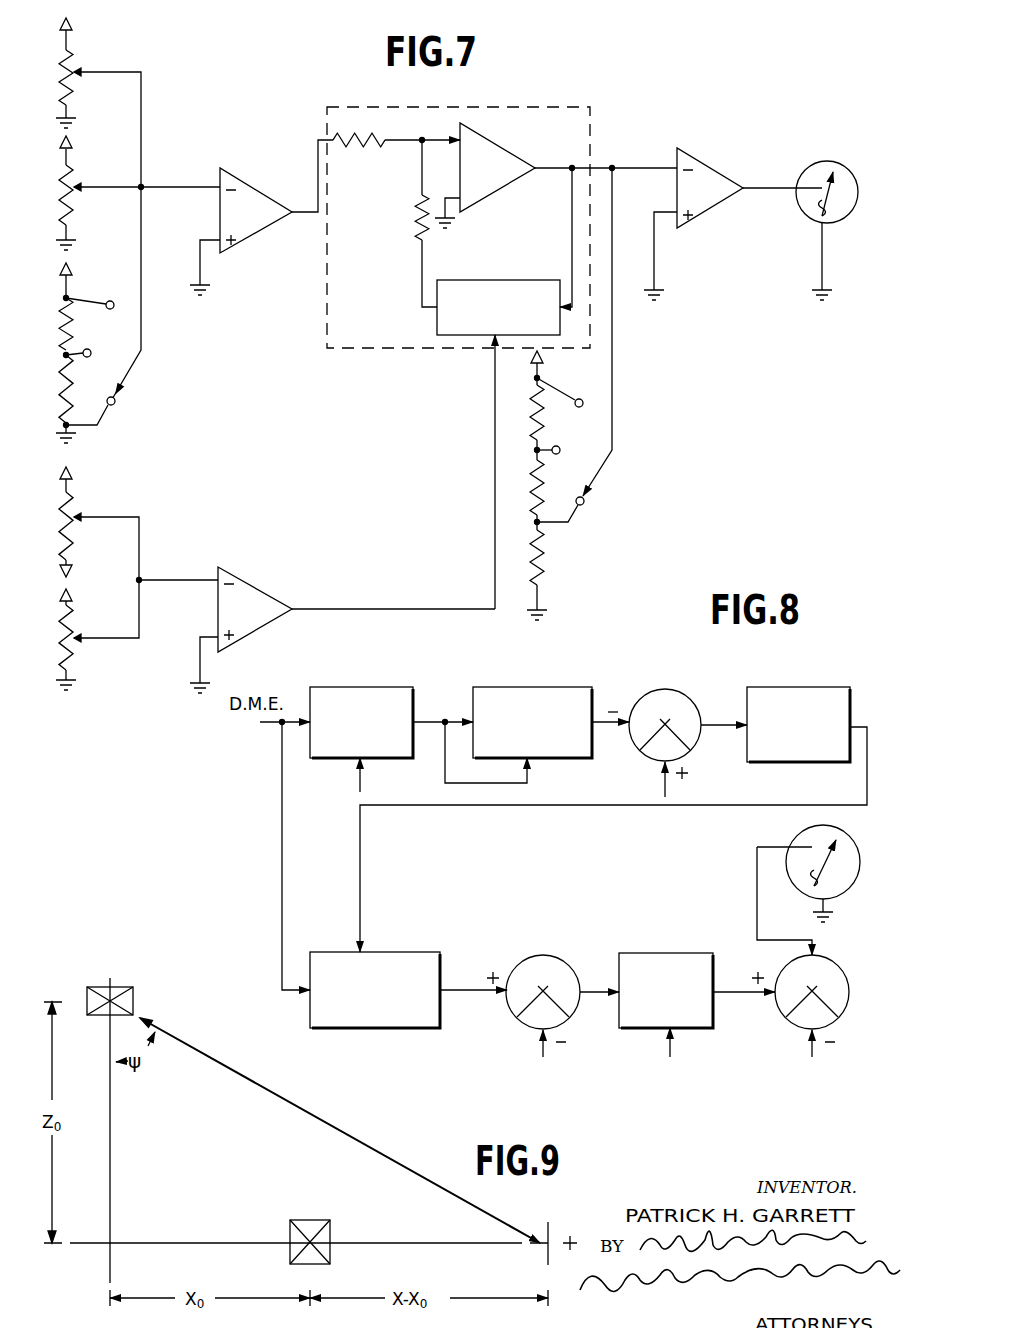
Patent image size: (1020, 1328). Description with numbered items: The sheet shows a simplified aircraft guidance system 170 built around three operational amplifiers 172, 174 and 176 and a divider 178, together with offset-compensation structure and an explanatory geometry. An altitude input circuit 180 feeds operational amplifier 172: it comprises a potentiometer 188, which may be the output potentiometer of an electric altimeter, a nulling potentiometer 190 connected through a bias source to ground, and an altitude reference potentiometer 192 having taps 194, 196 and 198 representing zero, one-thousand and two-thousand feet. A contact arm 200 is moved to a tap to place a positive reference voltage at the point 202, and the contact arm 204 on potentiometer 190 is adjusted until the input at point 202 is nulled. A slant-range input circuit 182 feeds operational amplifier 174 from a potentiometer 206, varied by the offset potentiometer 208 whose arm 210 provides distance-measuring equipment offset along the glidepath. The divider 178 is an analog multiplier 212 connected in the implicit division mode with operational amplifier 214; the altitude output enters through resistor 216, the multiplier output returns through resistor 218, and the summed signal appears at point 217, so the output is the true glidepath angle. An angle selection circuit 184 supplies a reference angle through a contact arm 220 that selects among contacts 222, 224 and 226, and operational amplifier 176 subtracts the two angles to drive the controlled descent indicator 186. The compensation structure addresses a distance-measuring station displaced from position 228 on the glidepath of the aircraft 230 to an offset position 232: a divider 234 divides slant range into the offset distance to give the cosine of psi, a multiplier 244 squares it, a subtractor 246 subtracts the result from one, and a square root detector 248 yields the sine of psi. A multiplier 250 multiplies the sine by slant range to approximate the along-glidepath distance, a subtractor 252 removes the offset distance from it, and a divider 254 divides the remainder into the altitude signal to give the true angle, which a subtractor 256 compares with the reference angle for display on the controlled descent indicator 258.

In FIG. 7, the simplified aircraft guidance system 170 is at (690, 366).
In FIG. 7, the operational amplifier 172 is at (237, 178).
In FIG. 7, the operational amplifier 174 is at (252, 585).
In FIG. 7, the operational amplifier 176 is at (708, 165).
In FIG. 7, the divider 178 is at (400, 350).
In FIG. 7, the altitude input circuit 180 is at (143, 128).
In FIG. 7, the distance-measuring equipment slant-range input circuit 182 is at (142, 563).
In FIG. 7, the angle selection circuit 184 is at (547, 567).
In FIG. 7, the controlled descent indicator 186 is at (806, 225).
In FIG. 7, the potentiometer 188 is at (73, 53).
In FIG. 7, the nulling potentiometer 190 is at (75, 200).
In FIG. 7, the altitude reference potentiometer 192 is at (68, 315).
In FIG. 7, the tap 194 is at (115, 404).
In FIG. 7, the tap 196 is at (87, 357).
In FIG. 7, the tap 198 is at (113, 302).
In FIG. 7, the contact arm 200 is at (137, 363).
In FIG. 7, the point 202 is at (146, 190).
In FIG. 7, the contact arm 204 is at (121, 187).
In FIG. 7, the potentiometer 206 is at (72, 653).
In FIG. 7, the distance-measuring equipment offset potentiometer 208 is at (70, 500).
In FIG. 7, the arm 210 is at (89, 522).
In FIG. 7, the analog multiplier 212 is at (495, 278).
In FIG. 7, the operational amplifier 214 is at (496, 148).
In FIG. 7, the resistor 216 is at (361, 150).
In FIG. 7, the point 217 is at (418, 143).
In FIG. 7, the resistor 218 is at (415, 225).
In FIG. 7, the contact arm 220 is at (600, 475).
In FIG. 7, the contact 222 is at (588, 504).
In FIG. 7, the contact 224 is at (558, 446).
In FIG. 7, the contact 226 is at (583, 401).
In FIG. 9, the position 228 is at (315, 1218).
In FIG. 9, the aircraft 230 is at (545, 1255).
In FIG. 9, the position 232 is at (123, 985).
In FIG. 8, the divider 234 is at (360, 686).
In FIG. 8, the multiplier 244 is at (535, 686).
In FIG. 8, the subtractor 246 is at (666, 688).
In FIG. 8, the square root detector 248 is at (835, 686).
In FIG. 8, the multiplier 250 is at (358, 1028).
In FIG. 8, the subtractor 252 is at (522, 1022).
In FIG. 8, the divider 254 is at (643, 1028).
In FIG. 8, the subtractor 256 is at (790, 1028).
In FIG. 8, the controlled descent indicator 258 is at (800, 832).